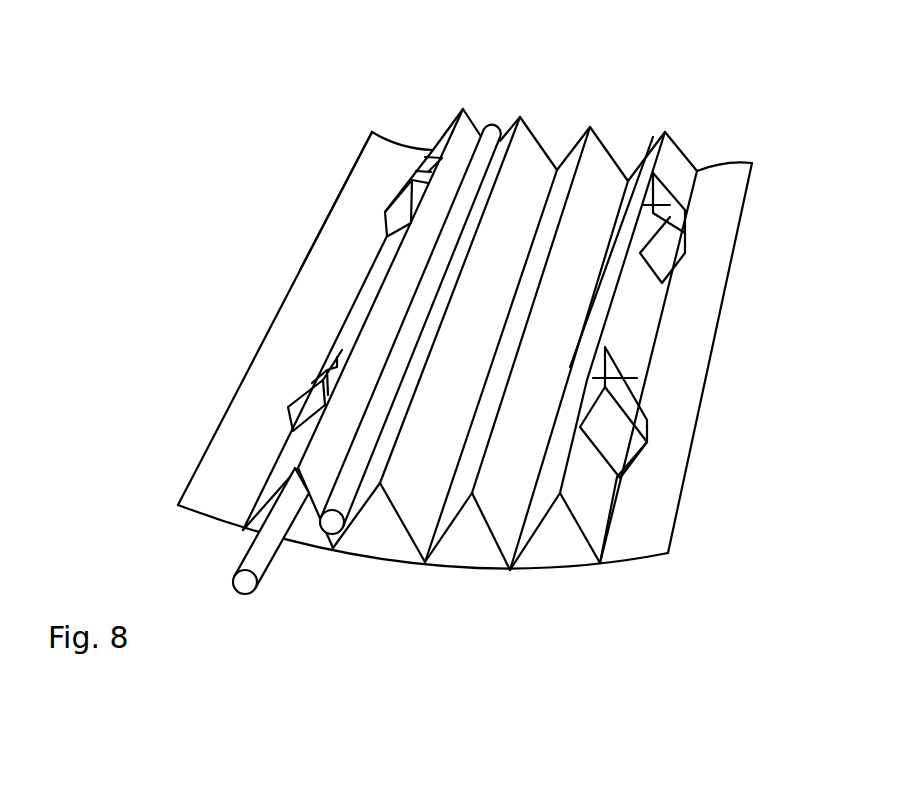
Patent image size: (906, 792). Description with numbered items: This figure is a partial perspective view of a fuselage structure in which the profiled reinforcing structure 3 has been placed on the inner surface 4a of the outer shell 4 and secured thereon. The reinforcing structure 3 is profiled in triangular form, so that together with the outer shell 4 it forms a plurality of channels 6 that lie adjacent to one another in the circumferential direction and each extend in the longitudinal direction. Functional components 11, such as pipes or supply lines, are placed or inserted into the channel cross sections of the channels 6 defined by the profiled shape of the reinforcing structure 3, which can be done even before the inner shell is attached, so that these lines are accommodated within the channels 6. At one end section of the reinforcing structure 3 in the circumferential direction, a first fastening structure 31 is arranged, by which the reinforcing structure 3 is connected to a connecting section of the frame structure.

The reinforcing structure 3 is at (533, 540).
The outer shell 4 is at (198, 494).
The inner surface of the outer shell 4a is at (275, 366).
The channels 6 is at (534, 184).
The functional components 11 is at (331, 528).
The first fastening structure 31 is at (654, 384).